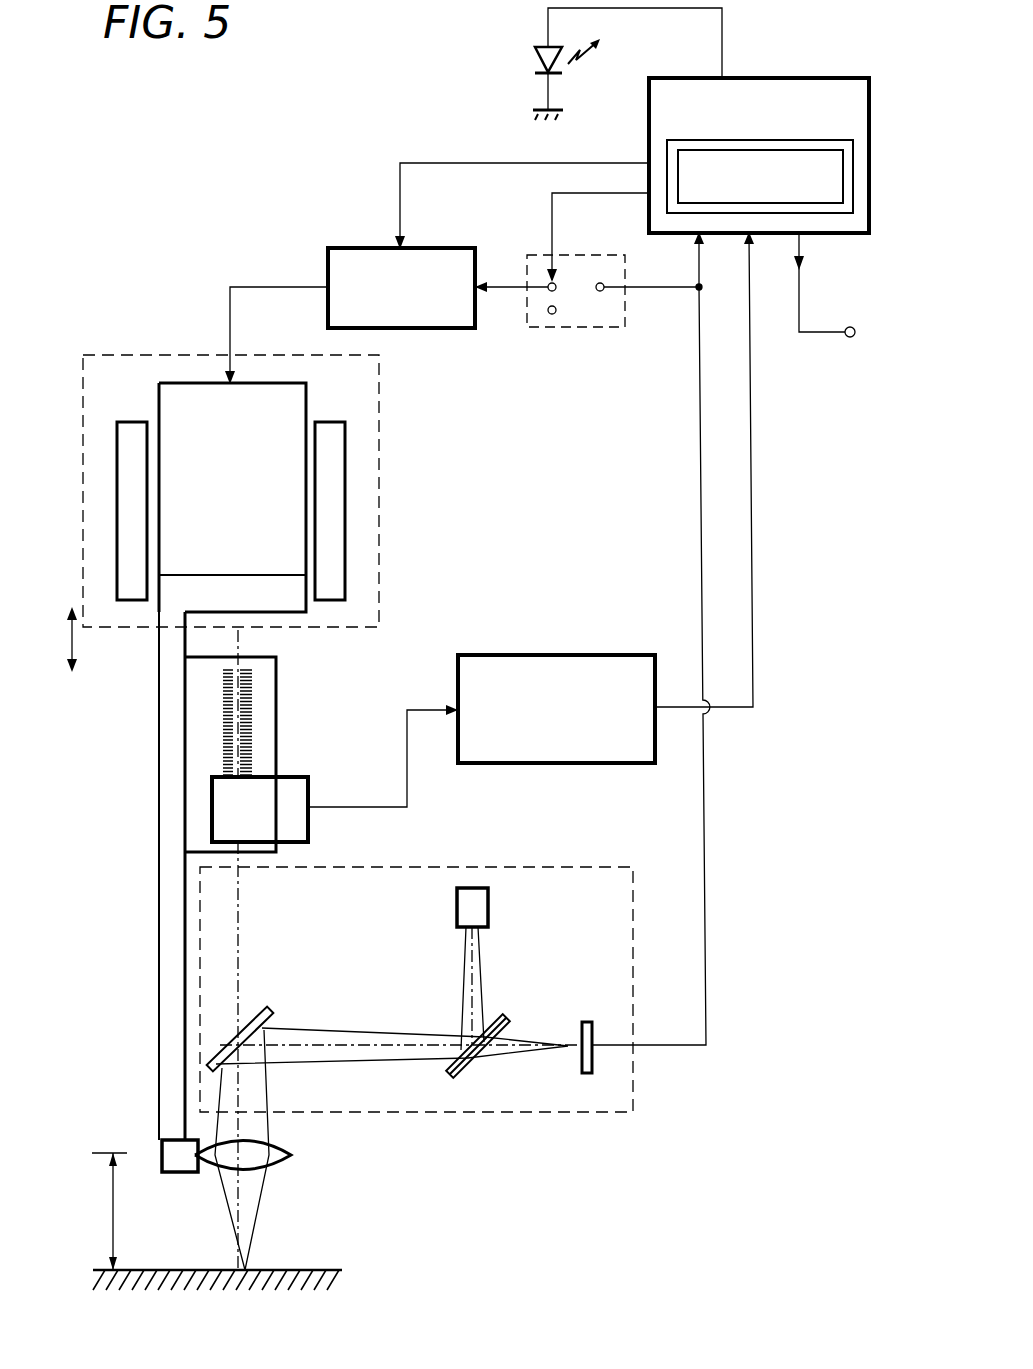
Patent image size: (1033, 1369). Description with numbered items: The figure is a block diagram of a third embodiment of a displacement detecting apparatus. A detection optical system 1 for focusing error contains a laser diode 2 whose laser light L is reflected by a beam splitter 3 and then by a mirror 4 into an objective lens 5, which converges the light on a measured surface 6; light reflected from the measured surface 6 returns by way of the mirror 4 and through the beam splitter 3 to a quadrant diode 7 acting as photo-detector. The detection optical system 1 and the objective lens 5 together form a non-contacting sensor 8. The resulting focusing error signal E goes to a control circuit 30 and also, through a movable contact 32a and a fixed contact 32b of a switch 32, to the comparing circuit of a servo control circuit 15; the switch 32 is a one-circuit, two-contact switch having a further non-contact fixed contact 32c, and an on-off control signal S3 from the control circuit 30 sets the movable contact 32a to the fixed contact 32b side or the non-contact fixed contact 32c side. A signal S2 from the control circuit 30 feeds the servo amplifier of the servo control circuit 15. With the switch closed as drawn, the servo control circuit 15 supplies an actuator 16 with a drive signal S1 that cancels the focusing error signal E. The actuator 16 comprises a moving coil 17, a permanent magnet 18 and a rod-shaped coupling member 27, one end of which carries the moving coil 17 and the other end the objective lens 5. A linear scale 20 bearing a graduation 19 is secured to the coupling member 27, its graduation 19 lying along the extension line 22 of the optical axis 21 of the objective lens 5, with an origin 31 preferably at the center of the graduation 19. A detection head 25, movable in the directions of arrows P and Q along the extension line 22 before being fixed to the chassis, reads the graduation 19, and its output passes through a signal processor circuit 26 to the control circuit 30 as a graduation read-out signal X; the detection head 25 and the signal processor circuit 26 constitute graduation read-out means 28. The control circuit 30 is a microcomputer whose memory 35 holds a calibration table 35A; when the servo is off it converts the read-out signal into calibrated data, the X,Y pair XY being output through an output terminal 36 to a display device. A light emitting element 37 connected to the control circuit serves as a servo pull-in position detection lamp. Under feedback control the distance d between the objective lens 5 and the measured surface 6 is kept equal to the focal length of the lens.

The detection optical system 1 is at (399, 1079).
The laser diode 2 is at (490, 908).
The beam splitter 3 is at (451, 1073).
The mirror 4 is at (266, 1011).
The objective lens 5 is at (296, 1164).
The measured surface 6 is at (311, 1270).
The quadrant diode 7 is at (578, 1068).
The non-contacting sensor 8 is at (377, 1079).
The servo control circuit 15 is at (345, 248).
The actuator 16 is at (135, 355).
The moving coil 17 is at (268, 383).
The permanent magnet 18 is at (128, 422).
The graduation 19 is at (252, 728).
The linear scale 20 is at (276, 672).
The optical axis 21 is at (268, 1126).
The extension line 22 is at (245, 898).
The detection head 25 is at (308, 826).
The signal processor circuit 26 is at (472, 763).
The coupling member 27 is at (148, 728).
The graduation read-out means 28 is at (433, 757).
The control circuit 30 is at (800, 78).
The origin 31 is at (216, 755).
The switch 32 is at (588, 326).
The movable contact 32a is at (601, 291).
The fixed contact 32b is at (548, 291).
The non-contact fixed contact 32c is at (552, 314).
The memory 35 is at (813, 213).
The calibration table 35A is at (810, 305).
The output terminal 36 is at (850, 338).
The light emitting element 37 is at (535, 60).
The drive signal S1 is at (273, 287).
The signal S2 is at (462, 163).
The on-off control signal S3 is at (568, 193).
The graduation read-out signal X is at (746, 712).
The read-out signal and calibrated data XY is at (779, 345).
The laser light L is at (480, 982).
The focusing error signal E is at (716, 888).
The arrow P is at (70, 630).
The arrow Q is at (53, 677).
The distance d is at (109, 1211).